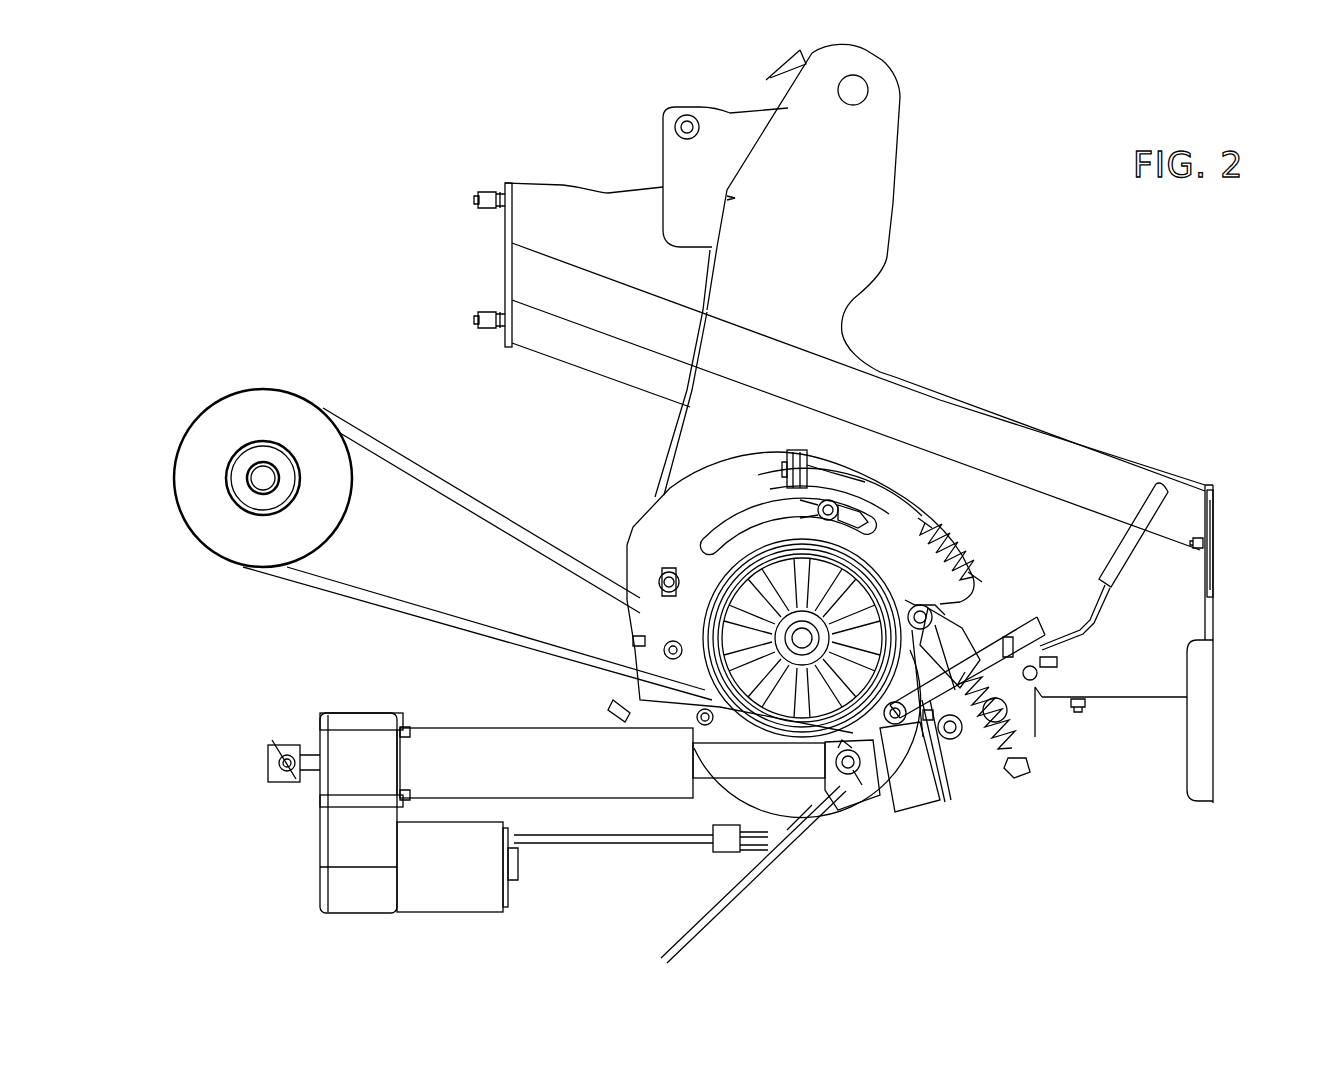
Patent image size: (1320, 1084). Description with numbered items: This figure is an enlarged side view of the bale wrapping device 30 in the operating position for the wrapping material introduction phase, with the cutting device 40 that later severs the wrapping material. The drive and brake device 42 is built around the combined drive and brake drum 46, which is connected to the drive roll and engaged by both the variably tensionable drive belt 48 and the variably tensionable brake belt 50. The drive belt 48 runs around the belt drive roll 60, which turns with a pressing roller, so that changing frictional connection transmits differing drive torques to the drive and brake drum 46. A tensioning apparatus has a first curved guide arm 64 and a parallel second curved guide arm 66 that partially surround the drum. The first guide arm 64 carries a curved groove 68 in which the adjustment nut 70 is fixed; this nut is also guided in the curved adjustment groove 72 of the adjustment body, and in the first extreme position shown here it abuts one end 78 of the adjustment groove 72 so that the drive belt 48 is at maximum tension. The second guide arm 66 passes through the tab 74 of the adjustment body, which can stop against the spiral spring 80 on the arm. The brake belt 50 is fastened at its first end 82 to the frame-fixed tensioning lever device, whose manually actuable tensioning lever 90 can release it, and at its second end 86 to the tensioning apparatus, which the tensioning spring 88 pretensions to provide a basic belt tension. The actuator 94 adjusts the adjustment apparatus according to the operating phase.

The bale wrapping device 30 is at (352, 185).
The cutting device 40 is at (822, 805).
The drive and brake device 42 is at (977, 798).
The combined drive and brake drum 46 is at (700, 656).
The drive belt 48 is at (425, 476).
The brake belt 50 is at (730, 570).
The belt drive roll 60 is at (232, 433).
The first curved guide arm 64 is at (950, 505).
The second curved guide arm 66 is at (905, 504).
The curved groove 68 is at (872, 502).
The adjustment nut 70 is at (828, 500).
The adjustment groove 72 is at (747, 517).
The tab 74 is at (792, 450).
The end of the adjustment groove 78 is at (850, 500).
The spiral spring 80 is at (943, 543).
The first end of the brake belt 82 is at (902, 733).
The second end of the brake belt 86 is at (937, 600).
The tensioning spring 88 is at (1023, 737).
The tensioning lever 90 is at (1128, 552).
The actuator 94 is at (510, 770).